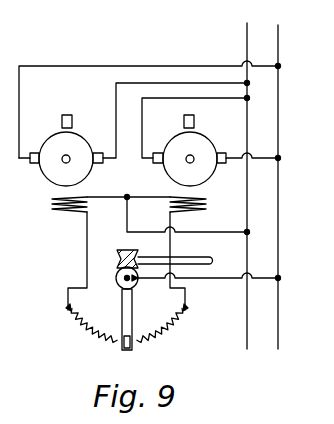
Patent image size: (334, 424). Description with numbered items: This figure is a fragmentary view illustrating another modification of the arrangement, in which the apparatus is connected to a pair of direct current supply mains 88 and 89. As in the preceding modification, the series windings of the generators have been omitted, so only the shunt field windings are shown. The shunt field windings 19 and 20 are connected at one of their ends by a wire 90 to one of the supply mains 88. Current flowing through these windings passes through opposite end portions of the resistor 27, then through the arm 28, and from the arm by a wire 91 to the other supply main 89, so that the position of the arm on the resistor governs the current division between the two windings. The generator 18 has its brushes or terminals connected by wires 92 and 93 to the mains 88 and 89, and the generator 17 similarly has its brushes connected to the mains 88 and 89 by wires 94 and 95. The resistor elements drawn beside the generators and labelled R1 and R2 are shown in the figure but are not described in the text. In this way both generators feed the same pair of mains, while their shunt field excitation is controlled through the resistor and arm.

The supply main 88 is at (245, 28).
The supply main 89 is at (278, 38).
The wire 95 is at (21, 91).
The wire 94 is at (115, 88).
The wire 92 is at (212, 97).
The wire 93 is at (271, 159).
The generator 17 is at (57, 138).
The resistor R1 is at (72, 122).
The generator 18 is at (181, 137).
The resistor R2 is at (194, 122).
The shunt field winding 19 is at (72, 214).
The shunt field winding 20 is at (191, 217).
The wire 90 is at (229, 231).
The wire 91 is at (225, 279).
The arm 28 is at (131, 316).
The resistor 27 is at (121, 341).